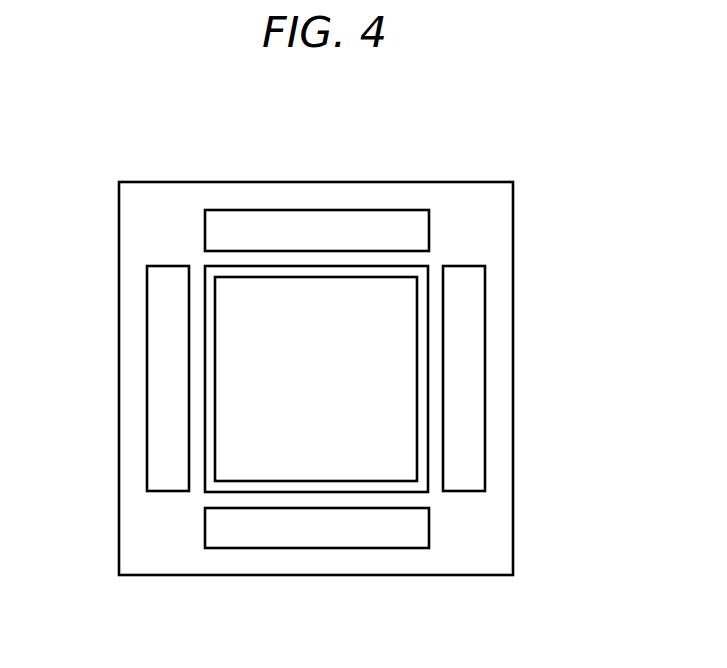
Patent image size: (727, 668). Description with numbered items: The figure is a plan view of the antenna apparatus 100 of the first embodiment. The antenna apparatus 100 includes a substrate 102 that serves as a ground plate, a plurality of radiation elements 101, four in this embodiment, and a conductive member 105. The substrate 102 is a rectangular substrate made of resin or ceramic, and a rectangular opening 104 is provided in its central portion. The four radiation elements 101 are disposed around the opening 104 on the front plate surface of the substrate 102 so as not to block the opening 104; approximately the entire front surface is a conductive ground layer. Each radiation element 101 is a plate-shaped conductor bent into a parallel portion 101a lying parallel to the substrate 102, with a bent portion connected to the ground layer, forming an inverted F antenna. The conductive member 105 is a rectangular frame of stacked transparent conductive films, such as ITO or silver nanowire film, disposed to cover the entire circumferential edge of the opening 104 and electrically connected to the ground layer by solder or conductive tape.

The antenna apparatus 100 is at (323, 352).
The radiation element 101 is at (383, 205).
The parallel portion 101a is at (325, 228).
The substrate 102 is at (471, 200).
The opening 104 is at (401, 456).
The conductive member 105 is at (393, 486).